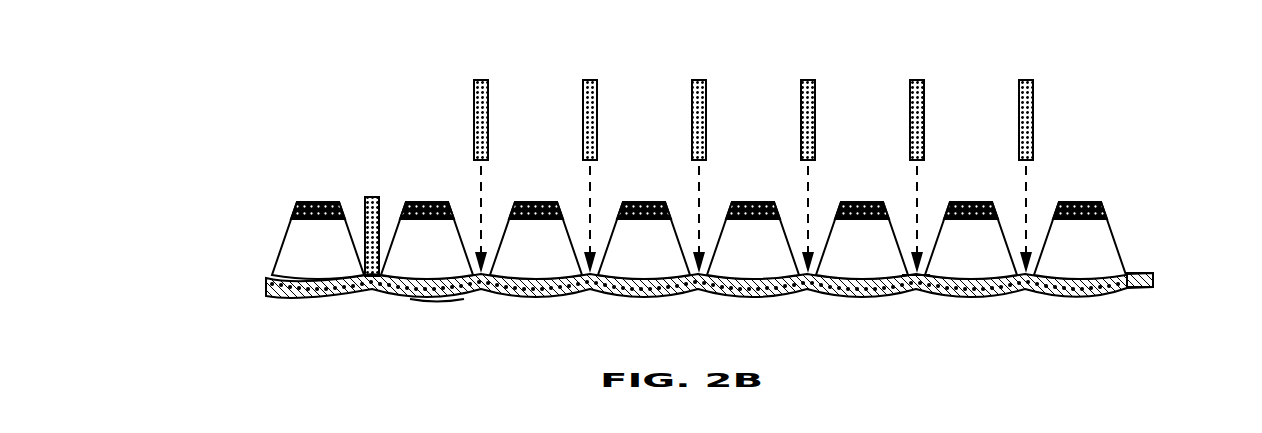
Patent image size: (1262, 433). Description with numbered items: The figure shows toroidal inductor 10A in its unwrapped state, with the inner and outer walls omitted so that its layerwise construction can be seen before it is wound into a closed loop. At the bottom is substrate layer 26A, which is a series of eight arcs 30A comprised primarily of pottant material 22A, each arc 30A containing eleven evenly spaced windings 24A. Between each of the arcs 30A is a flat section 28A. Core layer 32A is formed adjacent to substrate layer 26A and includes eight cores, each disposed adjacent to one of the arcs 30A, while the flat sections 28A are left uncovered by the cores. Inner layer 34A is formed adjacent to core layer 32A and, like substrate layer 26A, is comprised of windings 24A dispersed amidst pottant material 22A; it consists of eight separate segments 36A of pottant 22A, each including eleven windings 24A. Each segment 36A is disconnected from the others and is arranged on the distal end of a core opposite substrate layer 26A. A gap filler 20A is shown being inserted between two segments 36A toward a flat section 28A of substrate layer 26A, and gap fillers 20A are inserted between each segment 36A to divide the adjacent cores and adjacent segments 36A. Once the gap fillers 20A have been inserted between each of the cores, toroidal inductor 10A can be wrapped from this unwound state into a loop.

The toroidal inductor 10A is at (699, 207).
The gap filler 20A is at (373, 197).
The pottant material 22A is at (1092, 297).
The windings 24A is at (748, 200).
The substrate layer 26A is at (250, 285).
The flat section 28A is at (916, 302).
The arc 30A is at (437, 322).
The core layer 32A is at (250, 247).
The inner layer 34A is at (250, 209).
The segment 36A is at (647, 189).